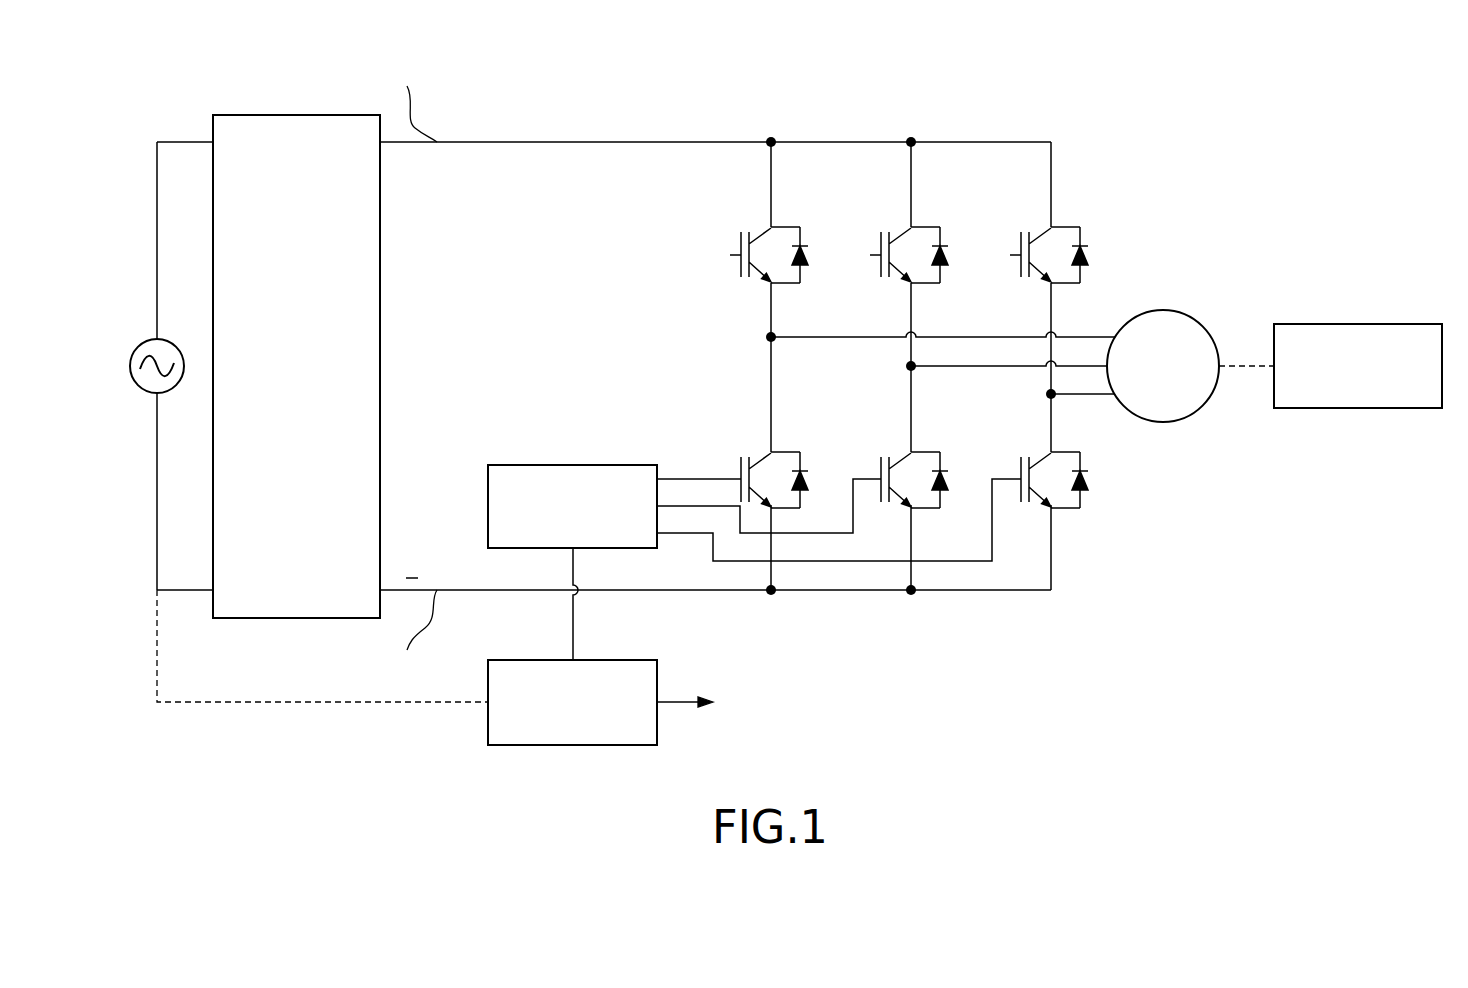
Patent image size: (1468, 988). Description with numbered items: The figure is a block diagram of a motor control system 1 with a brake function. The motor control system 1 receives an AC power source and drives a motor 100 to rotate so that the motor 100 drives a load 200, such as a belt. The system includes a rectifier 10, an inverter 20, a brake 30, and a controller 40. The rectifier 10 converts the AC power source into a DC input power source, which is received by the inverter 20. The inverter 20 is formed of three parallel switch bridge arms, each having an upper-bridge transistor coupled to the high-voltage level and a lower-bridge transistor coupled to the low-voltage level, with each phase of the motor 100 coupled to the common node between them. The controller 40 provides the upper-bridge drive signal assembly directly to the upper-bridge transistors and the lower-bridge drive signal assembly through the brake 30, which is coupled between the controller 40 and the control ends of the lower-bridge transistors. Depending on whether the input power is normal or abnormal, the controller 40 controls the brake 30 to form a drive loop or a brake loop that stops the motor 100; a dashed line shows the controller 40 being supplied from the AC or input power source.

The motor control system 1 is at (780, 43).
The rectifier 10 is at (297, 121).
The inverter 20 is at (997, 110).
The brake 30 is at (573, 470).
The controller 40 is at (562, 665).
The motor 100 is at (1163, 315).
The load 200 is at (1358, 330).